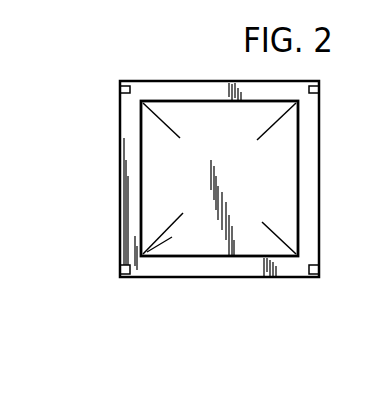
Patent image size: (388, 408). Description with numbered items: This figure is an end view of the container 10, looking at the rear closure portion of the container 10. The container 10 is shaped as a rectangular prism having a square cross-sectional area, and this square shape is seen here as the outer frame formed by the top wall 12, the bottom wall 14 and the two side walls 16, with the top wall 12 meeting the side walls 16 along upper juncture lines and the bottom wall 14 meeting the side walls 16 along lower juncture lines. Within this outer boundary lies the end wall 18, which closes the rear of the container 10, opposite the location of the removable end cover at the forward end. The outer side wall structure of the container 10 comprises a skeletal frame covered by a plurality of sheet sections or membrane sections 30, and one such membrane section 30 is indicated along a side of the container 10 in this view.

The container 10 is at (112, 100).
The top wall 12 is at (200, 81).
The bottom wall 14 is at (236, 277).
The side walls 16 is at (120, 141).
The end wall 18 is at (251, 178).
The membrane sections 30 is at (155, 198).